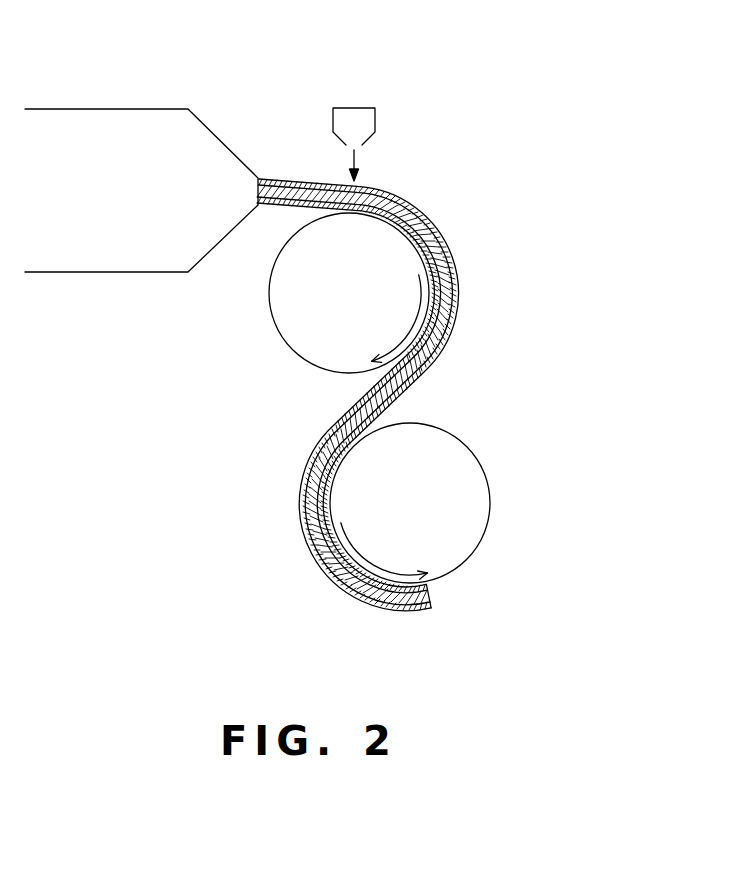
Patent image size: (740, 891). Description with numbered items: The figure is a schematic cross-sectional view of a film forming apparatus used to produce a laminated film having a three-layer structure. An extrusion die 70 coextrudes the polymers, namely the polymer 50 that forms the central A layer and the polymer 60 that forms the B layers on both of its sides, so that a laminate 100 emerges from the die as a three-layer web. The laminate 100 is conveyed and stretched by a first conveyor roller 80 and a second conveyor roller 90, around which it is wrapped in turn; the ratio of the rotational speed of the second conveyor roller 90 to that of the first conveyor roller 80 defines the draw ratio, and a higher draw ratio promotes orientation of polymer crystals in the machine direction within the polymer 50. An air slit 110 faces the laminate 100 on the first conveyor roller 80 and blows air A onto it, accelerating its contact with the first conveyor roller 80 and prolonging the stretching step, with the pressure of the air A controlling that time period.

The extrusion die 70 is at (128, 109).
The air slit 110 is at (375, 120).
The air A is at (357, 165).
The laminate 100 is at (404, 395).
The polymer 50 is at (448, 350).
The polymer 60 is at (426, 379).
The first conveyor roller 80 is at (270, 315).
The second conveyor roller 90 is at (489, 485).